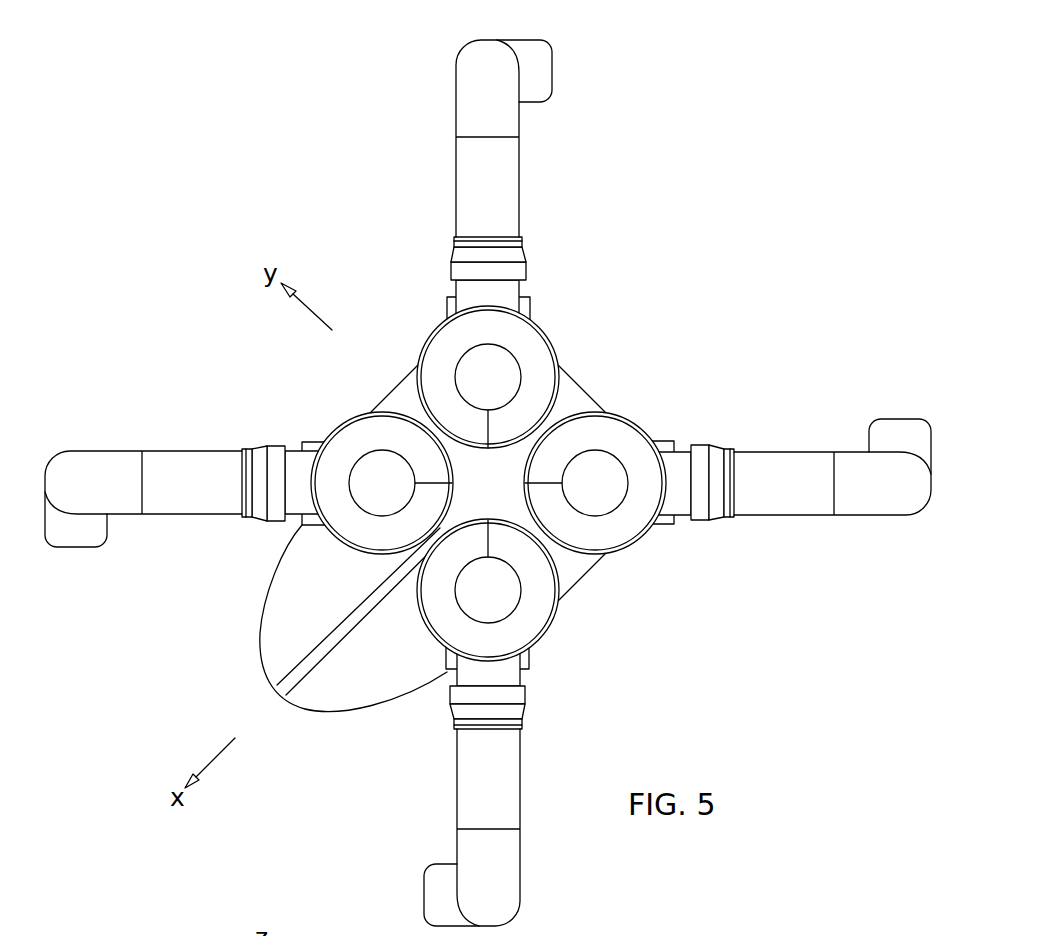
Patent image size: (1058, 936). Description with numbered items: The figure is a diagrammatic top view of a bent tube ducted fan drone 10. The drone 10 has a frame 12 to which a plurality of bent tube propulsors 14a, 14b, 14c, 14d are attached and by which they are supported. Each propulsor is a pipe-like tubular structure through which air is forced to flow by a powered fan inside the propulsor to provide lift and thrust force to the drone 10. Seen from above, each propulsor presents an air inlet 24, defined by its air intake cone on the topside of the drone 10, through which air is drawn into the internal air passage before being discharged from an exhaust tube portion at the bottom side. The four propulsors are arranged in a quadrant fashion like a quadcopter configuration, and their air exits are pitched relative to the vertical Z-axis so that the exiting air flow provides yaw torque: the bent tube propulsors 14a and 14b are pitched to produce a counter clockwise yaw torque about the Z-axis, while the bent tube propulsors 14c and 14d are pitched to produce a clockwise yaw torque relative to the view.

The ducted fan drone 10 is at (483, 478).
The frame 12 is at (588, 580).
The bent tube propulsor 14a is at (568, 180).
The bent tube propulsor 14b is at (438, 781).
The bent tube propulsor 14c is at (185, 496).
The bent tube propulsor 14d is at (786, 474).
The air inlet 24 is at (490, 367).